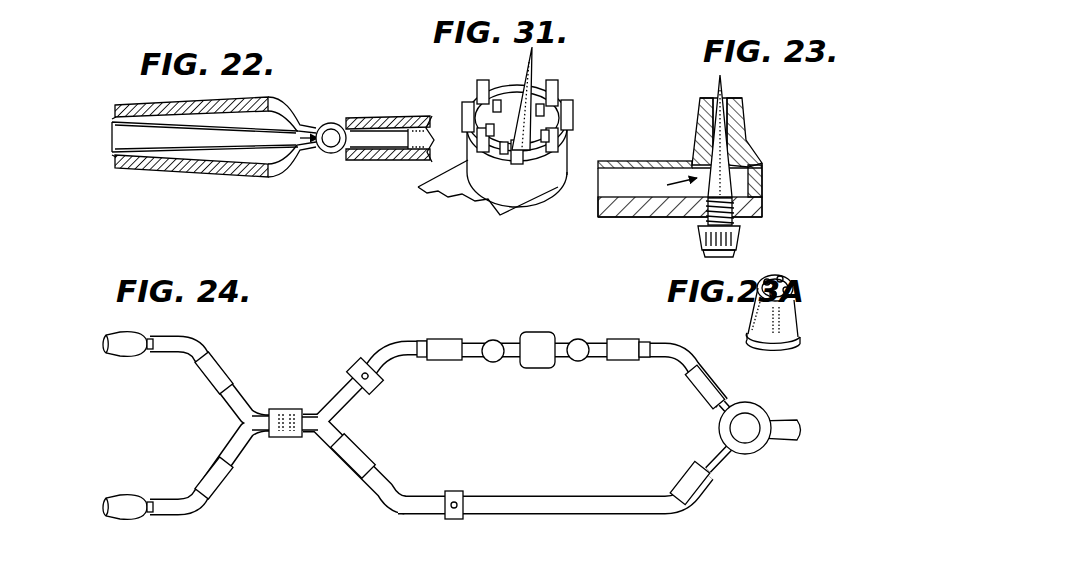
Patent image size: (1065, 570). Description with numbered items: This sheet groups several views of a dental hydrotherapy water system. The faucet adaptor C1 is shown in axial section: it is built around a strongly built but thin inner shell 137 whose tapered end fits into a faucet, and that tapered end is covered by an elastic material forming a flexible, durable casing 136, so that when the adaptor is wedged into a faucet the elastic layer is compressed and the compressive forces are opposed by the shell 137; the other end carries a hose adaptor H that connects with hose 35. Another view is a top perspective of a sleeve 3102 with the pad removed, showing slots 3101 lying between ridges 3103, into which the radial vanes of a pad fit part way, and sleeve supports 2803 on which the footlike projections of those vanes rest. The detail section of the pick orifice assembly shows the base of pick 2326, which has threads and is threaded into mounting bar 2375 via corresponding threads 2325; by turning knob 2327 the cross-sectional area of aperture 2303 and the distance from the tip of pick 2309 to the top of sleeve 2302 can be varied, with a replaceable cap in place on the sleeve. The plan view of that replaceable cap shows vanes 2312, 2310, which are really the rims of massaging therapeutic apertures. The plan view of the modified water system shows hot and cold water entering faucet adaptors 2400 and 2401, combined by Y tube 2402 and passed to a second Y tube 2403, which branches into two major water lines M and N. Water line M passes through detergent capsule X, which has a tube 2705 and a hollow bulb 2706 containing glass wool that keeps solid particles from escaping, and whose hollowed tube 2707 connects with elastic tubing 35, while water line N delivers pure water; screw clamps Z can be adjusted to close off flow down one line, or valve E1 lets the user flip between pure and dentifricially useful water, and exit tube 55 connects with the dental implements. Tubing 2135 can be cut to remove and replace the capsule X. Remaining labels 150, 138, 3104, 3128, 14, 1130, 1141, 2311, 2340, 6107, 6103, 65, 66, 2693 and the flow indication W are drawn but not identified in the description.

In FIG. 22, the casing 136 is at (154, 98).
In FIG. 22, the shell 137 is at (112, 119).
In FIG. 22, the inner tube 150 is at (110, 125).
In FIG. 22, the ball joint 138 is at (350, 162).
In FIG. 22, the elastic tubing 35 is at (410, 98).
In FIG. 24, the elastic tubing 35 is at (197, 372).
In FIG. 22, the workpiece / flow direction W is at (145, 137).
In FIG. 23, the workpiece / flow direction W is at (622, 181).
In FIG. 22, the hose adaptor H is at (356, 110).
In FIG. 22, the faucet adaptor C1 is at (124, 175).
In FIG. 24, the faucet adaptor C1 is at (125, 363).
In FIG. 31, the slots 3101 is at (568, 115).
In FIG. 31, the sleeve 3102 is at (468, 123).
In FIG. 31, the ridges 3103 is at (480, 106).
In FIG. 31, the cage tab 3104 is at (552, 100).
In FIG. 31, the sleeve supports 2803 is at (498, 100).
In FIG. 31, the spike 3128 is at (534, 66).
In FIG. 23, the sheet 14 is at (652, 172).
In FIG. 23, the mounting bar 2375 is at (640, 212).
In FIG. 23, the sleeve 2302 is at (742, 101).
In FIG. 23, the aperture 2303 is at (696, 112).
In FIG. 23A, the aperture 2303 is at (757, 300).
In FIG. 23, the bore 1130 is at (692, 130).
In FIG. 23, the flange 1141 is at (753, 143).
In FIG. 23, the pick 2309 is at (719, 78).
In FIG. 23, the threads 2325 is at (704, 216).
In FIG. 23, the pick base 2326 is at (730, 220).
In FIG. 23, the knob 2327 is at (739, 247).
In FIG. 23A, the vane 2310 is at (792, 278).
In FIG. 23A, the aperture 2311 is at (791, 290).
In FIG. 23A, the vane 2312 is at (778, 276).
In FIG. 23A, the cylinder body 2340 is at (777, 320).
In FIG. 24, the faucet adaptor 2401 is at (103, 342).
In FIG. 24, the faucet adaptor 2400 is at (103, 508).
In FIG. 24, the Y tube 2402 is at (262, 432).
In FIG. 24, the second Y tube 2403 is at (315, 432).
In FIG. 24, the screw clamp Z is at (358, 363).
In FIG. 24, the connector 6107 is at (420, 360).
In FIG. 24, the tubing 2135 is at (452, 327).
In FIG. 24, the hollowed tube 2707 is at (470, 358).
In FIG. 24, the water line M is at (498, 333).
In FIG. 24, the hollow bulb 2706 is at (495, 362).
In FIG. 24, the capsule X is at (542, 368).
In FIG. 24, the tube 2705 is at (508, 362).
In FIG. 24, the connector 6103 is at (600, 346).
In FIG. 24, the exit tube 55 is at (796, 424).
In FIG. 24, the ring 65 is at (728, 406).
In FIG. 24, the tube 66 is at (712, 458).
In FIG. 24, the valve E1 is at (765, 448).
In FIG. 24, the water line N is at (533, 523).
In FIG. 24, the tube 2693 is at (620, 562).